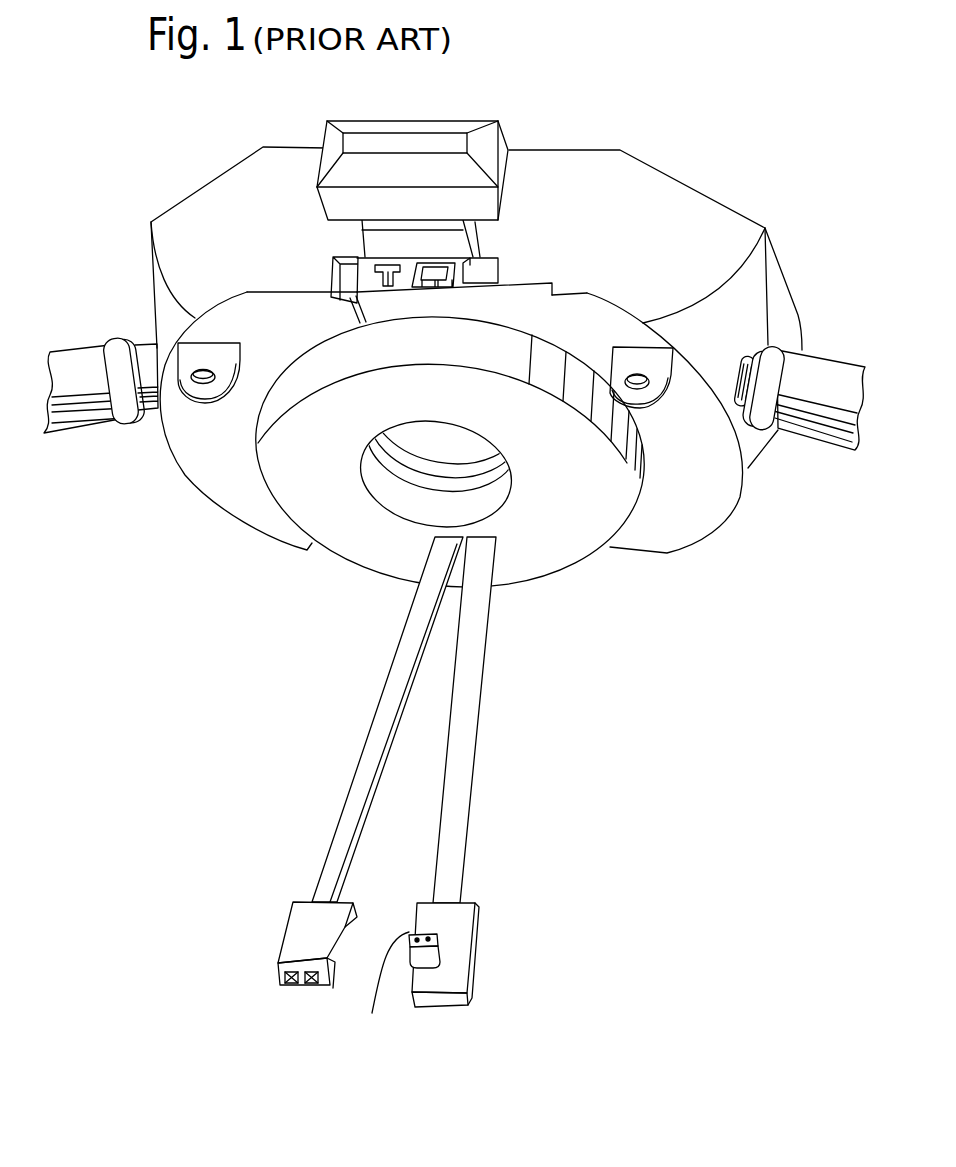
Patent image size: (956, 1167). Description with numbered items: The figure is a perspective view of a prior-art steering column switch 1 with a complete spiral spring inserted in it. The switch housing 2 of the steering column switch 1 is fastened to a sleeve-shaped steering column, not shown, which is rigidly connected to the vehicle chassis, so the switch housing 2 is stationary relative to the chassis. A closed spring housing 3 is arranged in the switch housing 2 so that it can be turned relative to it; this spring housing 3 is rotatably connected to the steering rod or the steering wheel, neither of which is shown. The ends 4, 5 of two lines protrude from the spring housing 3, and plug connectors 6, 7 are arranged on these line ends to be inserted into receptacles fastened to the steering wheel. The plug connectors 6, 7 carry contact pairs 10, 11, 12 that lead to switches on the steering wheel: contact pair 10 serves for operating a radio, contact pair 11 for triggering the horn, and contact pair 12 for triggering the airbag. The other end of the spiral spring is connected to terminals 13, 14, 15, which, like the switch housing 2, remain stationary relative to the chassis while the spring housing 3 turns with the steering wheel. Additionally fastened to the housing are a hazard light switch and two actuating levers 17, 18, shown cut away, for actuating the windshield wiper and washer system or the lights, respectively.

The steering column switch 1 is at (235, 508).
The switch housing 2 is at (225, 182).
The spring housing 3 is at (563, 543).
The end of line 4 is at (360, 797).
The end of line 5 is at (462, 802).
The plug connector 6 is at (282, 949).
The plug connector 7 is at (458, 927).
The contact pair 10 is at (278, 980).
The contact pair 11 is at (312, 982).
The contact pair 12 is at (401, 988).
The terminal 13 is at (390, 270).
The terminal 14 is at (435, 277).
The terminal 15 is at (433, 143).
The actuating lever 17 is at (100, 368).
The actuating lever 18 is at (822, 377).